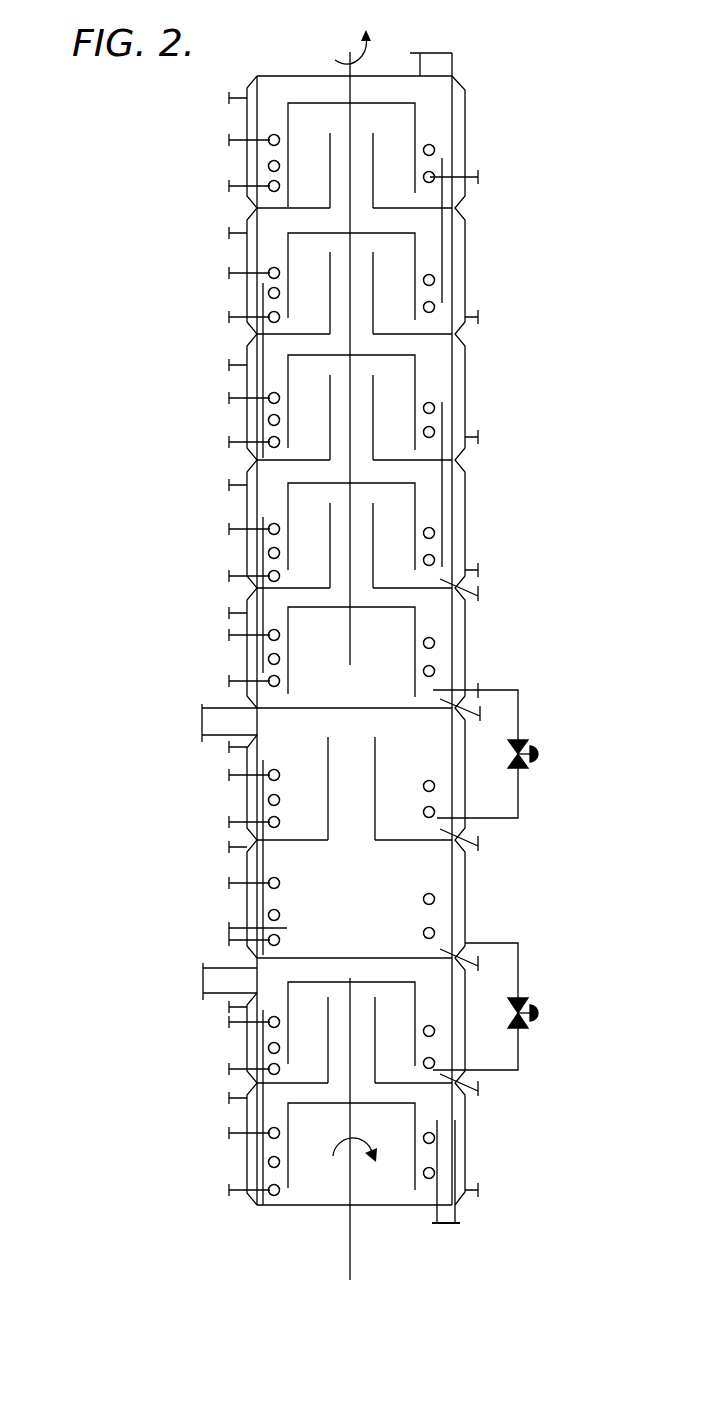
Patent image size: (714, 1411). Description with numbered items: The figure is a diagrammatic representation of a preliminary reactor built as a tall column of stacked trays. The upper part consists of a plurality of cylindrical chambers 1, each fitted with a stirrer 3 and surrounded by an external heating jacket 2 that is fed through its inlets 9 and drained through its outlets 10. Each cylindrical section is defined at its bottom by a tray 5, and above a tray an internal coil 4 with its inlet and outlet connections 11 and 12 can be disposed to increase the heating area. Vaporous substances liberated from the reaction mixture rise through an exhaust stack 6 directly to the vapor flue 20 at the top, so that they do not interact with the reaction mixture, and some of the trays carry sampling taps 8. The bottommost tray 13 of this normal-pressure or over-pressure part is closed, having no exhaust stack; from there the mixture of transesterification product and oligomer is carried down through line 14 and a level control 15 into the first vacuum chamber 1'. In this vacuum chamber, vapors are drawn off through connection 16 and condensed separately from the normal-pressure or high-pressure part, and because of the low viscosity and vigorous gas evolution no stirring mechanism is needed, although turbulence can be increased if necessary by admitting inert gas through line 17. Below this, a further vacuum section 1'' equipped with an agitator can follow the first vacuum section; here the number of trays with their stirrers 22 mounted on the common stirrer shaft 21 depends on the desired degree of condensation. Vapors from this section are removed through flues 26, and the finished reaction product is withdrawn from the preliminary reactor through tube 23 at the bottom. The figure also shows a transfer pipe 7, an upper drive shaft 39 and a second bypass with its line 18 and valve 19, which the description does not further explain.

The cylindrical chamber 1 is at (393, 303).
The first vacuum chamber 1' is at (412, 788).
The vacuum section equipped with an agitator 1'' is at (391, 1146).
The external heating jacket 2 is at (466, 890).
The stirrer 3 is at (415, 132).
The internal coil 4 is at (480, 178).
The tray 5 is at (430, 488).
The exhaust stack 6 is at (374, 262).
The transfer pipe 7 is at (263, 1045).
The sampling tap 8 is at (480, 1092).
The inlet of heating jacket 9 is at (480, 1190).
The outlet of heating jacket 10 is at (229, 1098).
The inlet connection of internal coil 11 is at (229, 1133).
The outlet connection of internal coil 12 is at (348, 958).
The bottommost tray 13 is at (360, 708).
The line 14 is at (520, 702).
The level control 15 is at (543, 754).
The connection 16 is at (202, 725).
The line 17 is at (229, 928).
The bypass conduit 18 is at (520, 1070).
The valve 19 is at (543, 1013).
The vapor flue 20 is at (440, 70).
The common stirrer shaft 21 is at (350, 1250).
The stirrer 22 is at (425, 1160).
The tube 23 is at (447, 1225).
The flue 26 is at (203, 980).
The upper stirrer shaft 39 is at (342, 58).